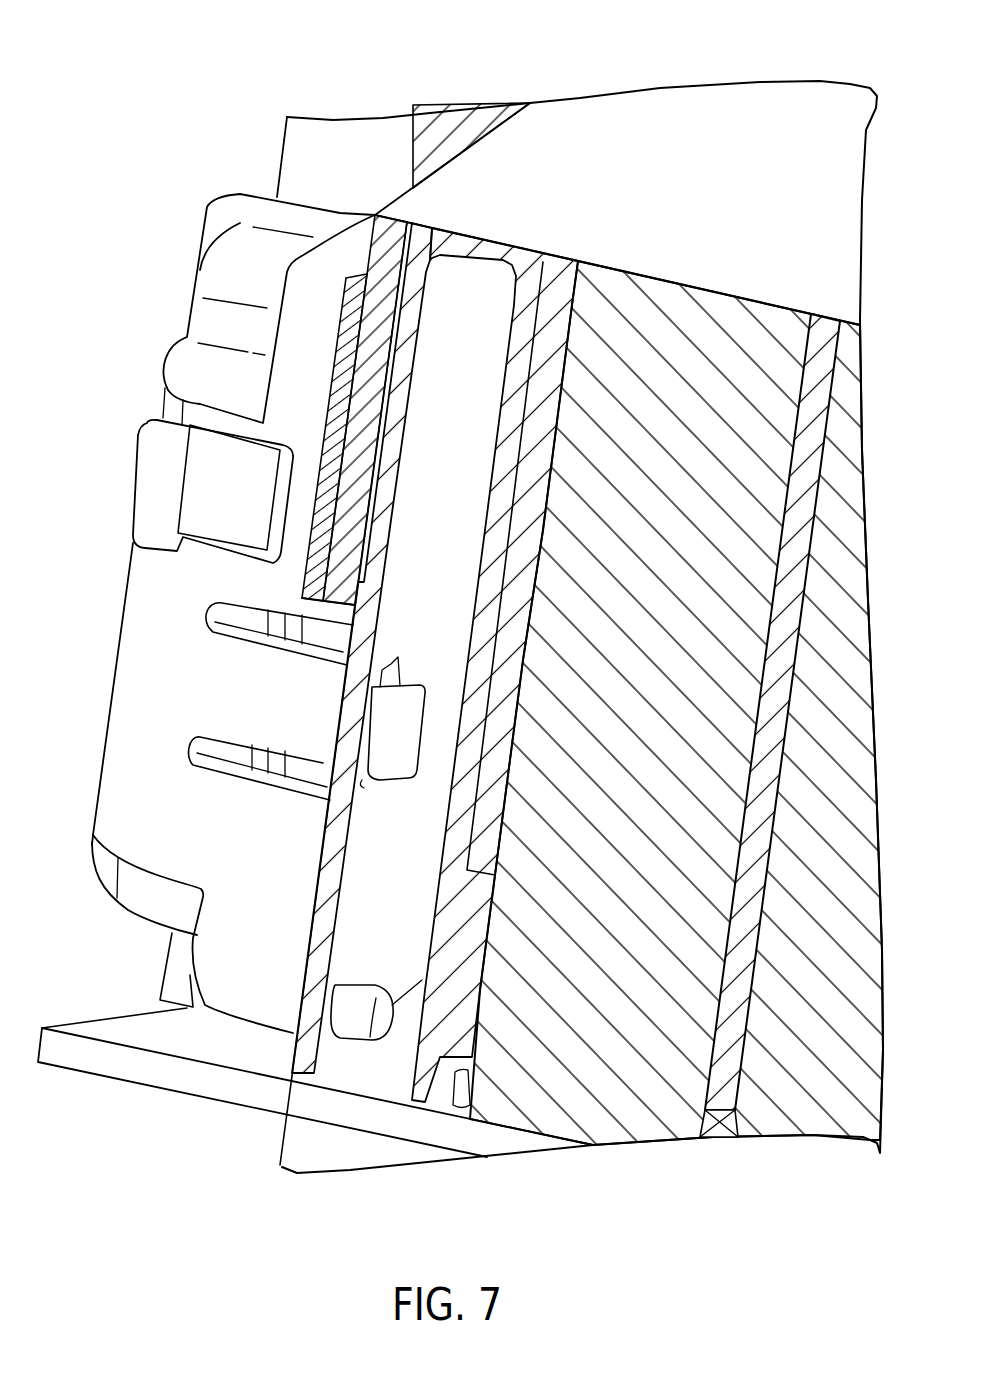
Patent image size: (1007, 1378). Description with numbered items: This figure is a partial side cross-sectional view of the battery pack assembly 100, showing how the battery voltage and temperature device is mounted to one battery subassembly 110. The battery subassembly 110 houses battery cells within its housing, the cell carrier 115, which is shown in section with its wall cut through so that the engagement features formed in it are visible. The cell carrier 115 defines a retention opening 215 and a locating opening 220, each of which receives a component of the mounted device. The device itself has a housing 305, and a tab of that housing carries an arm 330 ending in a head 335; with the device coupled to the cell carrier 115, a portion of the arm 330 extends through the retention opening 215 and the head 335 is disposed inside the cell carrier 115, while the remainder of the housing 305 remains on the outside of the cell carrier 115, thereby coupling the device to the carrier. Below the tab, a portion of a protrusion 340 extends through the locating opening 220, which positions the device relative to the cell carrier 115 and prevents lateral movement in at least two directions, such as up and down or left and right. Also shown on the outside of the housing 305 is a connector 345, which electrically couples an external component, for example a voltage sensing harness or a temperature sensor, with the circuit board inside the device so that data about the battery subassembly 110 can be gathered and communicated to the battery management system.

The battery pack assembly 100 is at (44, 88).
The battery subassembly 110 is at (29, 590).
The cell carrier 115 is at (418, 272).
The retention opening 215 is at (398, 658).
The locating opening 220 is at (330, 983).
The housing 305 is at (302, 290).
The arm 330 is at (252, 725).
The head 335 is at (381, 758).
The protrusion 340 is at (345, 1023).
The connector 345 is at (160, 480).